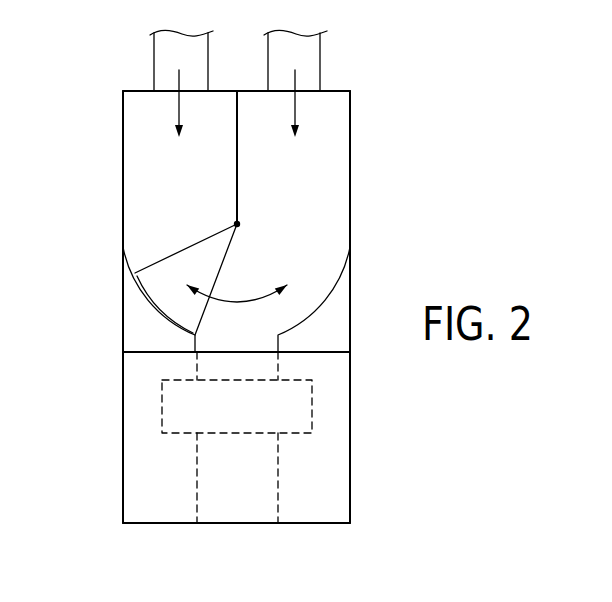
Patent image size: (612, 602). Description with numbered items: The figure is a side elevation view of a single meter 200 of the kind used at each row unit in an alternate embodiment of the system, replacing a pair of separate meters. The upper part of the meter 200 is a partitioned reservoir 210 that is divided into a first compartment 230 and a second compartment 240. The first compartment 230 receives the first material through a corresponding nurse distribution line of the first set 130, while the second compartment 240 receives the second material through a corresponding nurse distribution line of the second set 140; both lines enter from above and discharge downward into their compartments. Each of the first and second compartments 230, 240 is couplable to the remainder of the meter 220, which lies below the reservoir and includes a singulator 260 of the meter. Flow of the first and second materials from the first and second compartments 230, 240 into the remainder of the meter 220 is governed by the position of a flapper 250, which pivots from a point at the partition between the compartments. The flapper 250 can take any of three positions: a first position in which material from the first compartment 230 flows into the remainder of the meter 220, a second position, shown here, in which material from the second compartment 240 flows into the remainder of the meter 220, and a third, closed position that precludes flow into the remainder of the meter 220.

The first set of nurse distribution lines 130 is at (148, 63).
The second set of nurse distribution lines 140 is at (320, 63).
The meter 200 is at (371, 463).
The partitioned reservoir 210 is at (379, 90).
The remainder of the meter 220 is at (109, 467).
The first compartment 230 is at (145, 188).
The second compartment 240 is at (350, 165).
The flapper 250 is at (148, 248).
The singulator 260 is at (312, 405).